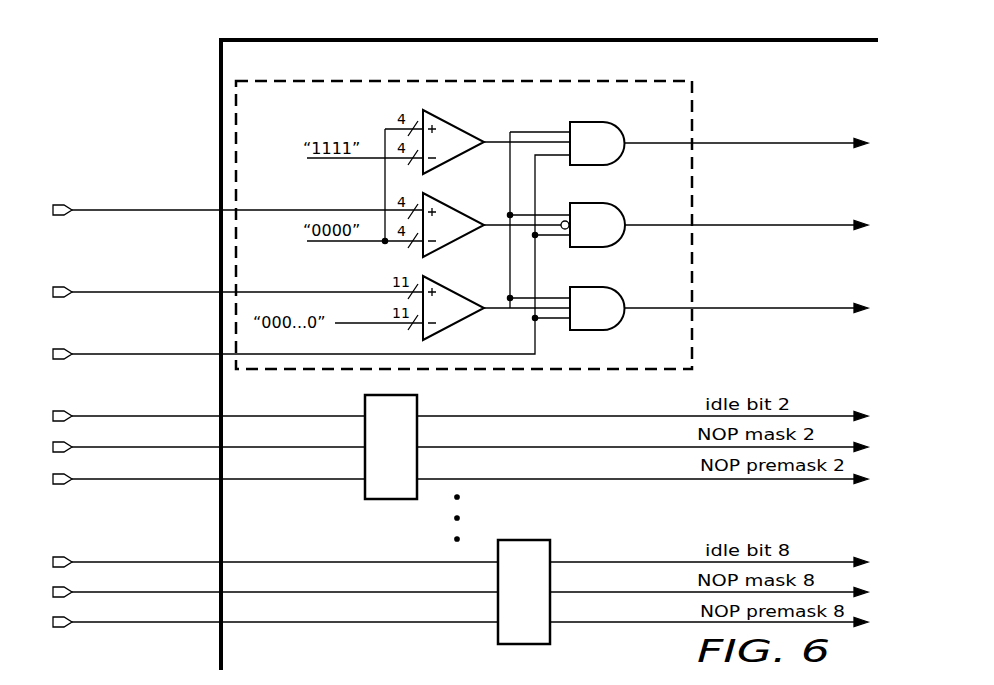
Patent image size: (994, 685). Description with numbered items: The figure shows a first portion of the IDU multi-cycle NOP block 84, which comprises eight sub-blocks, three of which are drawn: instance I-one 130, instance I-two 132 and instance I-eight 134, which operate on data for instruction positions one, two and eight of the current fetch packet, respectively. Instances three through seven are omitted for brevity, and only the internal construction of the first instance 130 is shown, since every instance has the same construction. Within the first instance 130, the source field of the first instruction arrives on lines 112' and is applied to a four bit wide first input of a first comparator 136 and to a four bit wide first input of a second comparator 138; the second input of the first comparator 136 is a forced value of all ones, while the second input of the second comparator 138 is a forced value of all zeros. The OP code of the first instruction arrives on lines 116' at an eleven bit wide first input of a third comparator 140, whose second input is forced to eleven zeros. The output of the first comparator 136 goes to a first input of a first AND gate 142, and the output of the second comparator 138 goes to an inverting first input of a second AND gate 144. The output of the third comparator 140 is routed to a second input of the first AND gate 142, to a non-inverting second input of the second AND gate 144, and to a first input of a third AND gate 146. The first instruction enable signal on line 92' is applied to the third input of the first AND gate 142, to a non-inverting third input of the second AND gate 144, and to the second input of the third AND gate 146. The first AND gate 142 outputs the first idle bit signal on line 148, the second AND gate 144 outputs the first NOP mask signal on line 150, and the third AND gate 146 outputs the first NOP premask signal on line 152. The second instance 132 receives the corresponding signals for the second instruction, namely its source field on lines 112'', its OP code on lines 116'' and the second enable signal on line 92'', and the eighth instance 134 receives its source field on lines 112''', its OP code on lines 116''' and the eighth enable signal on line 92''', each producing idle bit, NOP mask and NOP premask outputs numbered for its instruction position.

The IDU multi-cycle NOP block 84 is at (221, 67).
The instance I1 130 is at (697, 101).
The instance I2 132 is at (365, 403).
The instance I8 134 is at (552, 548).
The lines carrying source field src1 112' is at (238, 190).
The lines carrying OP code 1 116' is at (238, 269).
The line carrying first instruction enable signal 92' is at (311, 257).
The lines carrying source field src2 112'' is at (209, 393).
The lines carrying OP code 2 116'' is at (209, 437).
The line carrying second instruction enable signal 92'' is at (209, 493).
The lines carrying source field src8 112''' is at (275, 536).
The lines carrying OP code 8 116''' is at (275, 582).
The line carrying eighth instruction enable signal 92''' is at (275, 638).
The first comparator 136 is at (468, 132).
The second comparator 138 is at (468, 216).
The third comparator 140 is at (466, 297).
The first AND gate 142 is at (616, 131).
The second AND gate 144 is at (616, 213).
The third AND gate 146 is at (616, 296).
The line carrying idle bit 1 signal 148 is at (765, 145).
The line carrying NOP mask 1 signal 150 is at (765, 227).
The line carrying NOP premask 1 signal 152 is at (765, 310).